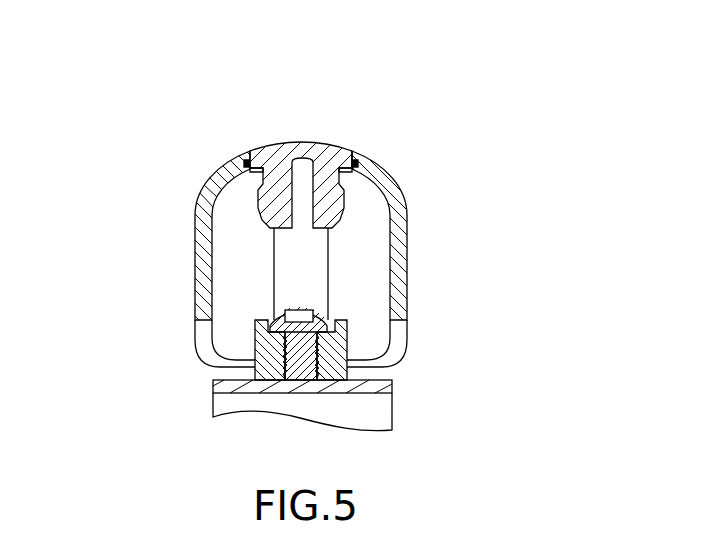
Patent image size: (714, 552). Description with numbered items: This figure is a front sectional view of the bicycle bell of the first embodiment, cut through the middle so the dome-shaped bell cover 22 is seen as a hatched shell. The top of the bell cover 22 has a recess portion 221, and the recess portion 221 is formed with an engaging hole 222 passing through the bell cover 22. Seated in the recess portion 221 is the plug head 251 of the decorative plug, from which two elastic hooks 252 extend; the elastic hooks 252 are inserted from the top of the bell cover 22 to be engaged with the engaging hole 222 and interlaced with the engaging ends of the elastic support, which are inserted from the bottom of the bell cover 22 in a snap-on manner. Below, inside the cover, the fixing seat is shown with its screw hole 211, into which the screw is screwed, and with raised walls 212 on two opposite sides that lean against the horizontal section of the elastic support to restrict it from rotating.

The bell cover 22 is at (207, 190).
The plug head 251 is at (277, 158).
The elastic hooks 252 is at (328, 200).
The recess portion 221 is at (352, 157).
The engaging hole 222 is at (355, 172).
The raised walls 212 is at (257, 320).
The screw hole 211 is at (348, 347).